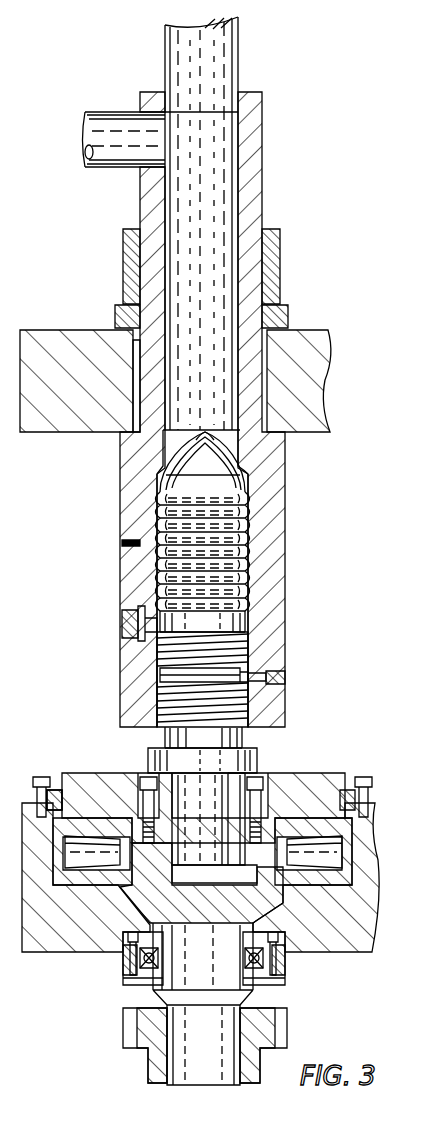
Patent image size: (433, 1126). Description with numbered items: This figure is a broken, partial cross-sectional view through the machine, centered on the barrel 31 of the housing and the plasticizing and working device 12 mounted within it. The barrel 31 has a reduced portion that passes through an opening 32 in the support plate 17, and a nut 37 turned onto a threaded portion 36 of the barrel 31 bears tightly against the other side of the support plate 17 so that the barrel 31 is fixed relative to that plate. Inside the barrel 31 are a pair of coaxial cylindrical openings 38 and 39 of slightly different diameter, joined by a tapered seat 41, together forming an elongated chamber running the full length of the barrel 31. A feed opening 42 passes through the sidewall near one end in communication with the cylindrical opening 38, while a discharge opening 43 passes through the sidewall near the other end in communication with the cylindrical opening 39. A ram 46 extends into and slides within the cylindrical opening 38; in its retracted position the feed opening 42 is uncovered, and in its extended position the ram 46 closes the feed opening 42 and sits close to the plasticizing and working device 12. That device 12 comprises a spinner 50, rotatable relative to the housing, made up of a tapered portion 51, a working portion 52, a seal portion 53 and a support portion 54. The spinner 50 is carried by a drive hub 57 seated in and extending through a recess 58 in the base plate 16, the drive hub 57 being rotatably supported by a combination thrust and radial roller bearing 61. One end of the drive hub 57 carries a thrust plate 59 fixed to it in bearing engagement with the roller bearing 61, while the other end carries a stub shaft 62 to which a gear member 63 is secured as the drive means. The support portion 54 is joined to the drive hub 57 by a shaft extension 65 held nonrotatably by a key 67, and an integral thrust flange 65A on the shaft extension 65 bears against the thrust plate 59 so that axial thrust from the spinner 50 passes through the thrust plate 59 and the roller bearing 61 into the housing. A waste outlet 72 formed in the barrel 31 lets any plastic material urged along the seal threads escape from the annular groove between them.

The plasticizing and working device 12 is at (95, 517).
The base plate 16 is at (75, 938).
The support plate 17 is at (311, 356).
The barrel 31 is at (270, 540).
The opening 32 is at (140, 420).
The threaded portion 36 is at (284, 309).
The nut 37 is at (117, 309).
The cylindrical opening 38 is at (232, 187).
The cylindrical opening 39 is at (243, 516).
The tapered seat 41 is at (242, 476).
The feed opening 42 is at (140, 118).
The discharge opening 43 is at (126, 621).
The ram 46 is at (223, 58).
The spinner 50 is at (246, 552).
The tapered portion 51 is at (206, 431).
The working portion 52 is at (161, 580).
The seal portion 53 is at (249, 652).
The support portion 54 is at (258, 758).
The drive hub 57 is at (181, 974).
The recess 58 is at (282, 893).
The thrust plate 59 is at (91, 785).
The roller bearing 61 is at (338, 858).
The stub shaft 62 is at (222, 1064).
The gear member 63 is at (160, 1061).
The shaft extension 65 is at (229, 810).
The thrust flange 65A is at (150, 762).
The key 67 is at (262, 808).
The waste outlet 72 is at (287, 678).